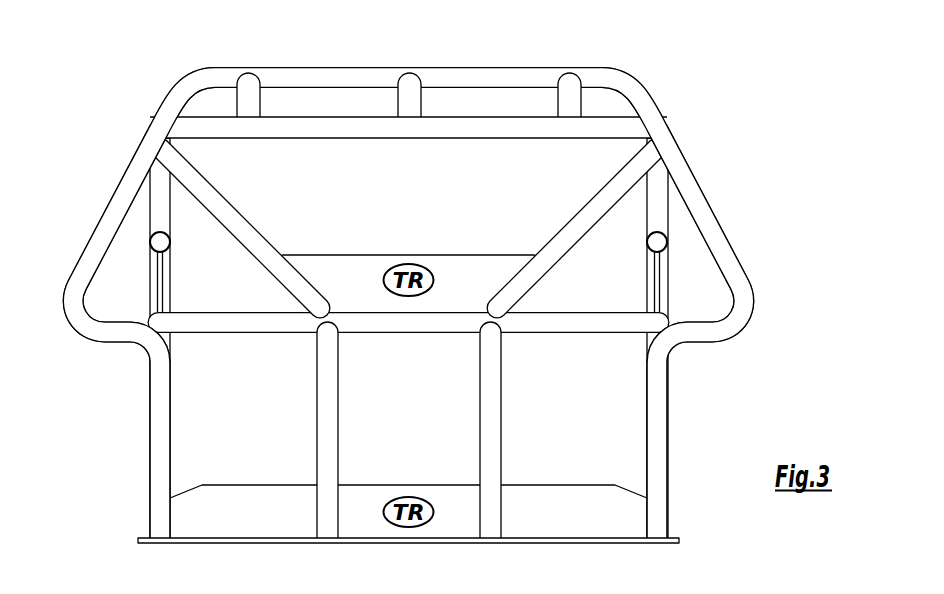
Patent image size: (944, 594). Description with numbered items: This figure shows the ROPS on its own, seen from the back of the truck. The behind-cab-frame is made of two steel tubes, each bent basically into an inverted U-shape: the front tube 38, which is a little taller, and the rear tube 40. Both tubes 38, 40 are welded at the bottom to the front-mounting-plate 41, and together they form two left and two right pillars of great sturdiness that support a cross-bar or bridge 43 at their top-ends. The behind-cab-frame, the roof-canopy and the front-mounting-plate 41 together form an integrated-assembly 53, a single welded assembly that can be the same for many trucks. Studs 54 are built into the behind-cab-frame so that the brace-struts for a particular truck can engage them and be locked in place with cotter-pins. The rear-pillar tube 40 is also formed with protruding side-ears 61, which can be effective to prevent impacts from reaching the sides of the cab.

The integrated-assembly 53 is at (707, 167).
The side-ears 61 is at (733, 278).
The cross-bar or bridge 43 is at (438, 107).
The studs 54 is at (164, 243).
The front tube 38 is at (658, 205).
The rear tube 40 is at (162, 415).
The front-mounting-plate 41 is at (270, 538).